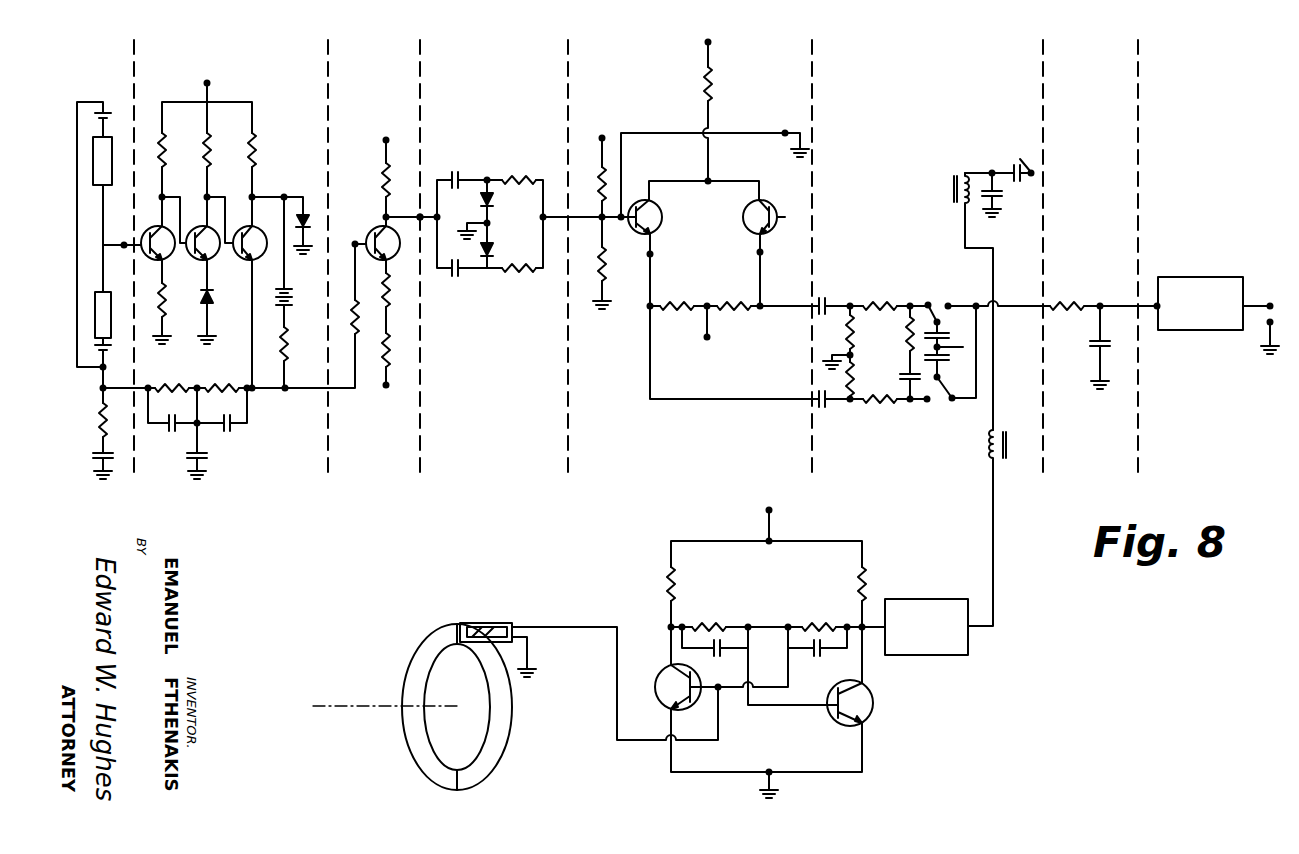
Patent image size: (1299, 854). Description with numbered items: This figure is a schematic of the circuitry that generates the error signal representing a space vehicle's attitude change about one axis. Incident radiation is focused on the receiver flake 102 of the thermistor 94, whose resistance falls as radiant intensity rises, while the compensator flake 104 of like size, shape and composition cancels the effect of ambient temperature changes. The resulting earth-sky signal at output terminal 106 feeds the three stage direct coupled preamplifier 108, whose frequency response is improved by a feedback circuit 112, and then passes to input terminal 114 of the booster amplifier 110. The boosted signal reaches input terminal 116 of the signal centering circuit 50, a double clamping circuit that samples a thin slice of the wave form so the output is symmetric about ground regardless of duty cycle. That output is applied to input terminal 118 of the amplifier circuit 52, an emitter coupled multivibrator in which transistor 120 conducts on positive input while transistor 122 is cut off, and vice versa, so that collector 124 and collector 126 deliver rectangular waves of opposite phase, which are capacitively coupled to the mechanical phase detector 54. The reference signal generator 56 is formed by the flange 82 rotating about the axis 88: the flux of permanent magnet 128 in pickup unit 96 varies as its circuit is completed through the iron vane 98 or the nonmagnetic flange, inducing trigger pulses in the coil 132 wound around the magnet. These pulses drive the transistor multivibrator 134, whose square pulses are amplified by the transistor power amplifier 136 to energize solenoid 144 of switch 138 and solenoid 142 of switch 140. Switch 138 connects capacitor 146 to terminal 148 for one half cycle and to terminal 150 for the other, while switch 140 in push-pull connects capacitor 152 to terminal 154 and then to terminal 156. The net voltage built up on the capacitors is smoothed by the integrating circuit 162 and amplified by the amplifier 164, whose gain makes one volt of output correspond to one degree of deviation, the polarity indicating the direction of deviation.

The signal centering circuit 50 is at (507, 76).
The amplifier circuit 52 is at (648, 72).
The phase detector 54 is at (940, 94).
The reference signal generator 56 is at (546, 561).
The flange 82 is at (420, 672).
The longitudinal axis 88 is at (345, 705).
The thermistor 94 is at (118, 82).
The pickup unit 96 is at (498, 610).
The iron vane 98 is at (490, 747).
The receiver flake 102 is at (104, 307).
The compensator flake 104 is at (109, 170).
The output terminal 106 is at (124, 245).
The preamplifier 108 is at (238, 76).
The booster amplifier 110 is at (392, 76).
The feedback circuit 112 is at (223, 383).
The input terminal 114 is at (353, 242).
The input terminal 116 is at (421, 216).
The input terminal 118 is at (567, 219).
The transistor 120 is at (662, 214).
The transistor 122 is at (748, 214).
The collector 124 is at (652, 257).
The collector 126 is at (759, 252).
The permanent magnet 128 is at (482, 622).
The coil 132 is at (519, 633).
The transistor multivibrator 134 is at (828, 535).
The transistor power amplifier 136 is at (938, 602).
The switch 138 is at (938, 302).
The switch 140 is at (936, 400).
The solenoid 142 is at (1005, 466).
The solenoid 144 is at (951, 190).
The capacitor 146 is at (947, 334).
The terminal 148 is at (926, 304).
The terminal 150 is at (965, 292).
The capacitor 152 is at (947, 357).
The terminal 154 is at (926, 401).
The terminal 156 is at (954, 400).
The integrating circuit 162 is at (1116, 122).
The amplifier 164 is at (1202, 281).